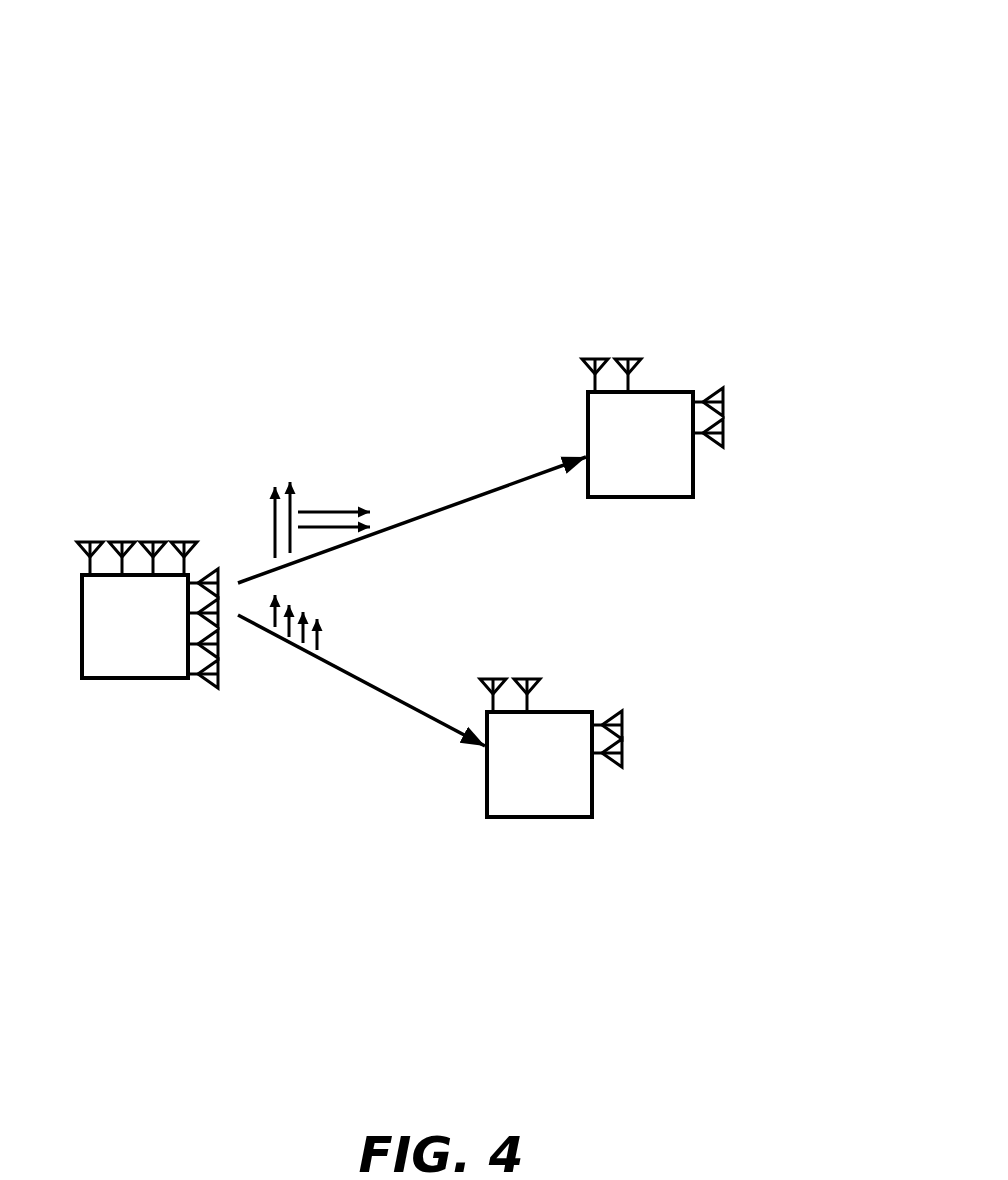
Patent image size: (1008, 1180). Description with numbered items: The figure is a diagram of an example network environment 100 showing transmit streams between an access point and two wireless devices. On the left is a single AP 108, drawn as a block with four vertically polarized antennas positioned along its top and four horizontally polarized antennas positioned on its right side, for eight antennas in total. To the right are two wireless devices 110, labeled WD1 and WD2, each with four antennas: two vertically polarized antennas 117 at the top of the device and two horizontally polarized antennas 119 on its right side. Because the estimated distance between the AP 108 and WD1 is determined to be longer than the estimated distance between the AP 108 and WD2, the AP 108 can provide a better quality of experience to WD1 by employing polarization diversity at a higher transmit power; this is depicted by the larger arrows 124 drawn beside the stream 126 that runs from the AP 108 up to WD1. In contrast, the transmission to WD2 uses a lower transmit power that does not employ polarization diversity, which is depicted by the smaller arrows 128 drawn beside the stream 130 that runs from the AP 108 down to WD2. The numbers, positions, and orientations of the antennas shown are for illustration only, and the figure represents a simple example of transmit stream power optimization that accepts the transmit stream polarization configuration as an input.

The network environment 100 is at (676, 143).
The access point 108 is at (135, 626).
The wireless devices 110 is at (590, 604).
The vertically polarized antennas 117 is at (156, 519).
The horizontally polarized antennas 119 is at (214, 711).
The larger arrows 124 is at (348, 455).
The stream 126 is at (453, 503).
The smaller arrows 128 is at (332, 616).
The stream 130 is at (394, 697).